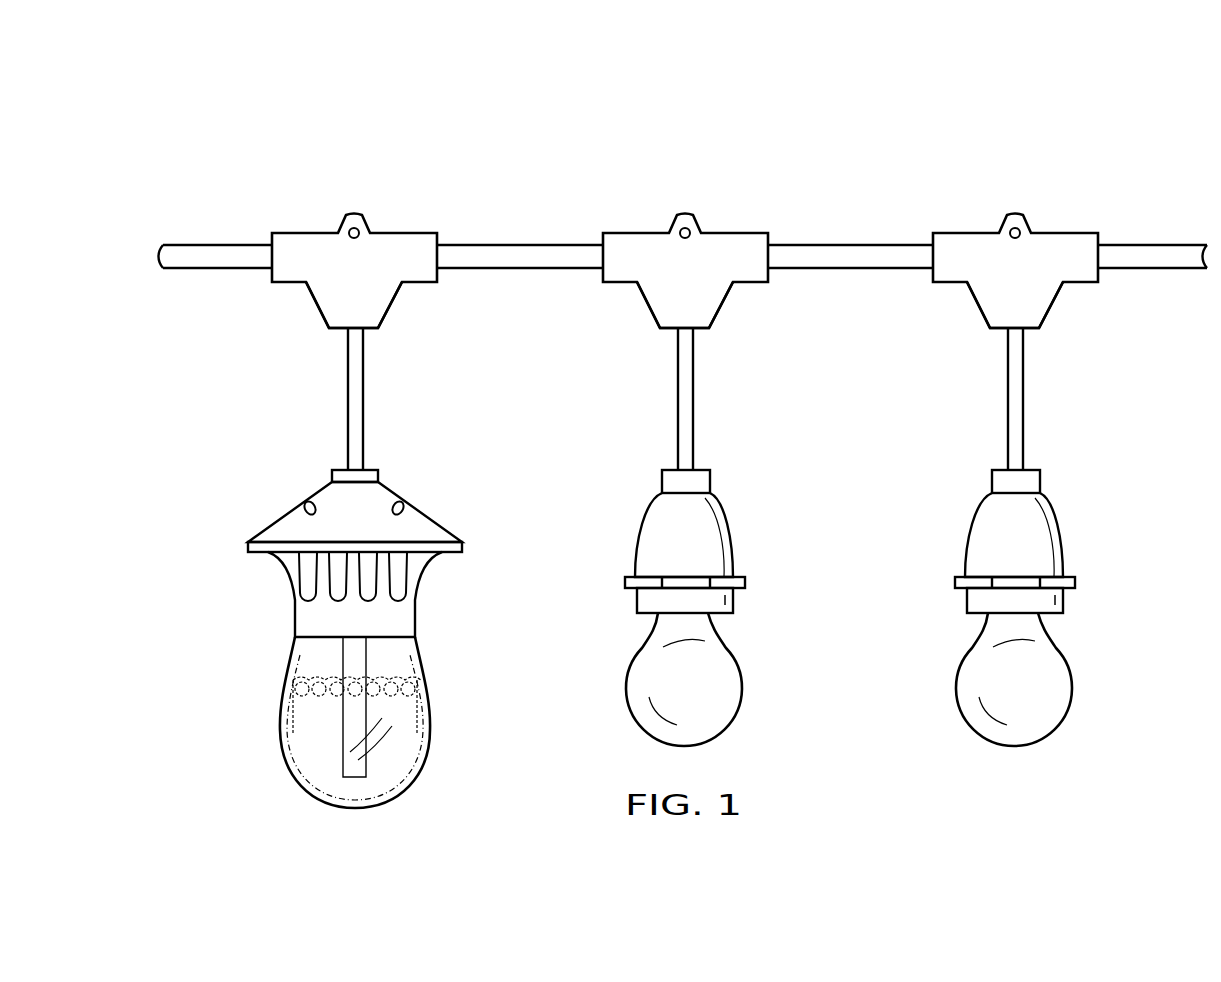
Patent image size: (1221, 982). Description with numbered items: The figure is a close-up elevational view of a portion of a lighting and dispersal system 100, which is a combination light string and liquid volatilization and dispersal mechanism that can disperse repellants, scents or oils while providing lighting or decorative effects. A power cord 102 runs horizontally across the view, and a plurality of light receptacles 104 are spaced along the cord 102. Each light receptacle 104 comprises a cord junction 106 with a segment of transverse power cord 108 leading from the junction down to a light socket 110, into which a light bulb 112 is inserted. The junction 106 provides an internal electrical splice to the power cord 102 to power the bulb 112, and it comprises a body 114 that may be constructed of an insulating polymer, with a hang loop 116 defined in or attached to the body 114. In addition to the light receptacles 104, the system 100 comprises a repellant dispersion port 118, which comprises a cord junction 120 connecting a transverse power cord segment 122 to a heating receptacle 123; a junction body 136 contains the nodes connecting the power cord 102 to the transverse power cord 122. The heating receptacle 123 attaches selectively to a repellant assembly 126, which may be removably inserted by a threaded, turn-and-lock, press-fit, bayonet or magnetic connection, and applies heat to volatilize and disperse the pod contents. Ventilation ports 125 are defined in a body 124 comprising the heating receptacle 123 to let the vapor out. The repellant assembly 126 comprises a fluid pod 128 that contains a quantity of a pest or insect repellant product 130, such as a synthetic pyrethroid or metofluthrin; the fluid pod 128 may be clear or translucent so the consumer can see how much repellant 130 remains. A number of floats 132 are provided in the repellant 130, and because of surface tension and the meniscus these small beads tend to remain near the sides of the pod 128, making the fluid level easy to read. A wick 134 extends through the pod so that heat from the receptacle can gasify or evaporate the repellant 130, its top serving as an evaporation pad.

The lighting and dispersal system 100 is at (843, 120).
The power cord 102 is at (850, 245).
The light receptacle 104 is at (644, 181).
The cord junction 106 is at (741, 223).
The transverse power cord 108 is at (693, 400).
The light socket 110 is at (733, 532).
The light bulb 112 is at (740, 688).
The body 114 is at (722, 305).
The hang loop 116 is at (352, 215).
The repellant dispersion port 118 is at (295, 191).
The cord junction 120 is at (409, 223).
The transverse power cord segment 122 is at (363, 400).
The heating receptacle 123 is at (281, 500).
The body 124 is at (420, 525).
The ventilation ports 125 is at (293, 602).
The repellant assembly 126 is at (272, 757).
The fluid pod 128 is at (412, 795).
The repellant product 130 is at (412, 732).
The floats 132 is at (302, 690).
The wick 134 is at (355, 777).
The junction body 136 is at (393, 305).